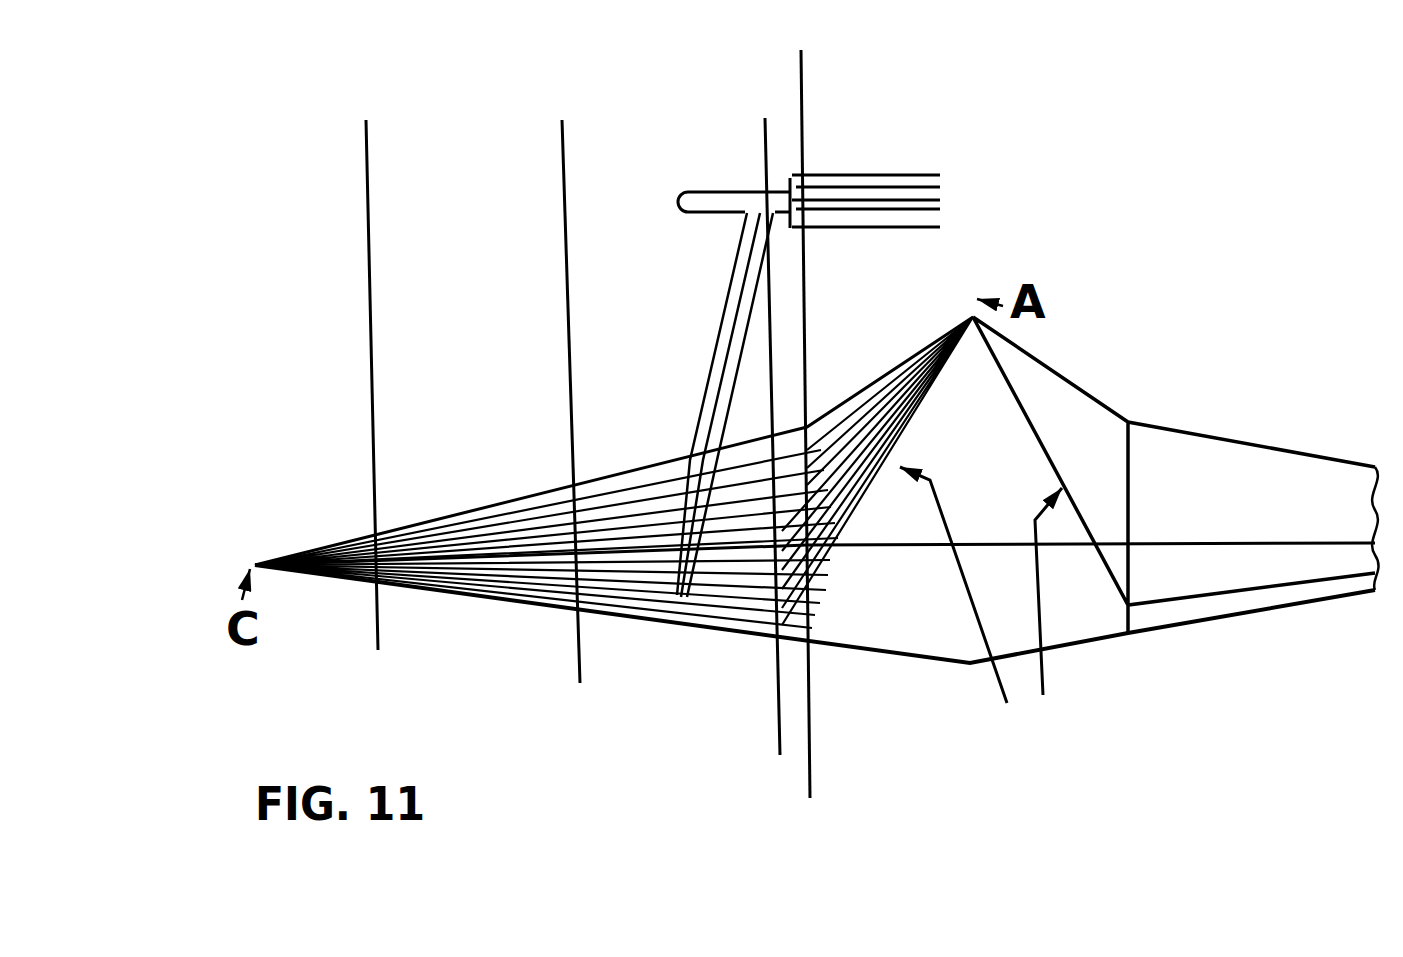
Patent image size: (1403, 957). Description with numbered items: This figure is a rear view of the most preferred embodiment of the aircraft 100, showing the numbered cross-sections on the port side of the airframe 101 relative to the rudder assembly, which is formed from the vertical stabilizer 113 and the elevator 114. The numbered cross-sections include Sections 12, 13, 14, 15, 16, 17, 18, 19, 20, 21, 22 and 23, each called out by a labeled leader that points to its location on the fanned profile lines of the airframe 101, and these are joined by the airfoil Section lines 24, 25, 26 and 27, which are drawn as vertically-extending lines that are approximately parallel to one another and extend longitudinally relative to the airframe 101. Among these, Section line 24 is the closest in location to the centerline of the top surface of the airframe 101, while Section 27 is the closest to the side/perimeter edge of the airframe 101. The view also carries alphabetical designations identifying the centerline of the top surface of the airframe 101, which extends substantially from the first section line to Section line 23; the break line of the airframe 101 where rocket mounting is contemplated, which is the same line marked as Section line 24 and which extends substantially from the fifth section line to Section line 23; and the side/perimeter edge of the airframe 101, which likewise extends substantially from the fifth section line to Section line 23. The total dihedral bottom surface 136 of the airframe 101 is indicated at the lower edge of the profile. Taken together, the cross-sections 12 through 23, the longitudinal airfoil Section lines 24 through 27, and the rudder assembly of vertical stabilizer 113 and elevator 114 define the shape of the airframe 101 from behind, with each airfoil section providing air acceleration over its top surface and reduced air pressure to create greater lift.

The hull 100 is at (1145, 248).
The airframe 101 is at (1228, 468).
The vertical stabilizer 113 is at (742, 283).
The elevator 114 is at (884, 202).
The total dihedral bottom surface 136 is at (675, 630).
The section 12 is at (470, 512).
The section 13 is at (498, 505).
The section 14 is at (532, 498).
The section 15 is at (565, 492).
The section 16 is at (610, 502).
The section 17 is at (660, 513).
The section 18 is at (740, 522).
The section 19 is at (717, 563).
The section 20 is at (757, 583).
The section 21 is at (790, 597).
The section 22 is at (823, 598).
The section 23 is at (913, 660).
The section line 24 is at (787, 60).
The section line 25 is at (755, 127).
The section line 26 is at (555, 135).
The section line 27 is at (355, 135).